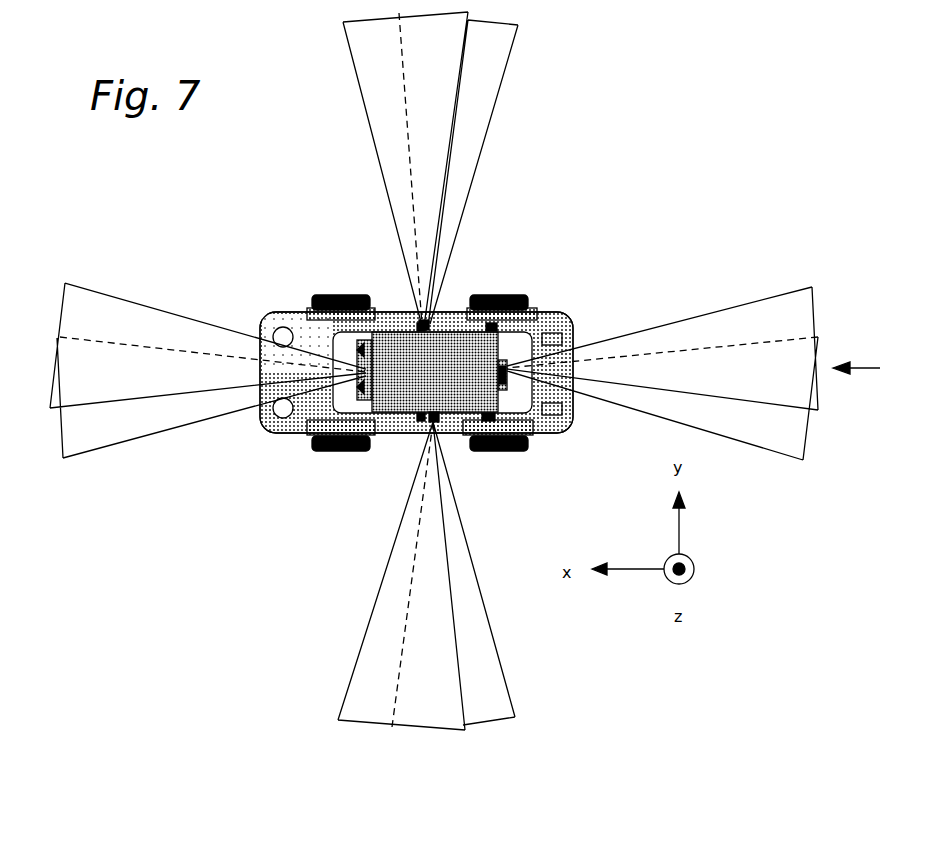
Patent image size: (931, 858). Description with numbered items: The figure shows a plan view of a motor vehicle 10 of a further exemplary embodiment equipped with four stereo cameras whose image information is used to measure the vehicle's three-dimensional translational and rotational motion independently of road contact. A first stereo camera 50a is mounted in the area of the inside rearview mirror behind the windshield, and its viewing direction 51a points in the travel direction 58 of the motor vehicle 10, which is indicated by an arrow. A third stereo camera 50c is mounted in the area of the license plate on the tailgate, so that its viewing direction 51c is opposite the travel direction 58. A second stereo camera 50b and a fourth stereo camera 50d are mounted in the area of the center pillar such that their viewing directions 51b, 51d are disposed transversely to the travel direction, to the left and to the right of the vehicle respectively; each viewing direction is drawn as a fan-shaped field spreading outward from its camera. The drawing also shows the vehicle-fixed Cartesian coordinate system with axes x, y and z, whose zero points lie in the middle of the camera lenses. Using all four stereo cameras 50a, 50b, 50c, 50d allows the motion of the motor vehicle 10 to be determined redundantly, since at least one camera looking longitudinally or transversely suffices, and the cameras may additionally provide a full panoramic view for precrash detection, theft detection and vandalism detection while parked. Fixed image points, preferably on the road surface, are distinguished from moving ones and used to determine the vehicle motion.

The motor vehicle 10 is at (551, 316).
The first stereo camera 50a is at (360, 380).
The second stereo camera 50b is at (437, 318).
The third stereo camera 50c is at (573, 335).
The fourth stereo camera 50d is at (440, 430).
The viewing direction of first stereo camera 51a is at (148, 327).
The viewing direction of second stereo camera 51b is at (462, 167).
The viewing direction of third stereo camera 51c is at (735, 323).
The viewing direction of fourth stereo camera 51d is at (472, 620).
The travel direction 58 is at (862, 357).